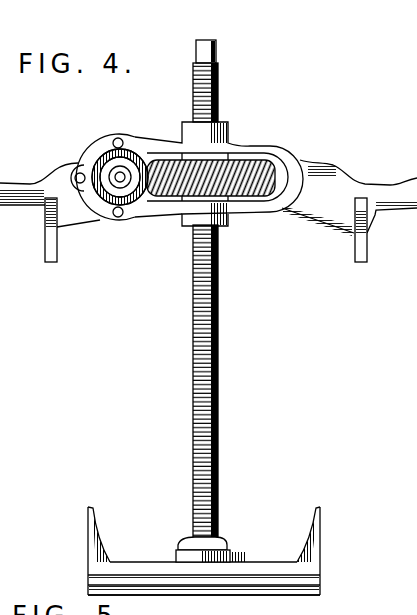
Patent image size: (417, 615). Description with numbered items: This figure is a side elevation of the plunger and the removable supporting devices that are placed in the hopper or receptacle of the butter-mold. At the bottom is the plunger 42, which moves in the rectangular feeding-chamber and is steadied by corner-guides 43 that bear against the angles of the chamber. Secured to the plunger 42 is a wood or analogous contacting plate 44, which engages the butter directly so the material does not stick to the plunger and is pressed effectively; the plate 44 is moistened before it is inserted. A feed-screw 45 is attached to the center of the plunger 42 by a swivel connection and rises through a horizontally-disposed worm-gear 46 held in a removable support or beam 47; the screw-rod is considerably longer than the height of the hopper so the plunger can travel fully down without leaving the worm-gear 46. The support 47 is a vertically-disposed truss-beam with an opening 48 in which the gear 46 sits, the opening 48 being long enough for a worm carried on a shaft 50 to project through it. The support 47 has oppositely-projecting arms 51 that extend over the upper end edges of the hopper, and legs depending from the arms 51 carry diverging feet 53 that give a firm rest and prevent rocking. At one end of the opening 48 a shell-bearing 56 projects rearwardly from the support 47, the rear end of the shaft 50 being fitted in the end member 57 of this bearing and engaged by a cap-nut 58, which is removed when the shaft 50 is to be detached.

The plunger 42 is at (260, 562).
The corner-guides 43 is at (92, 537).
The contacting plate 44 is at (308, 587).
The feed-screw 45 is at (219, 326).
The worm-gear 46 is at (163, 167).
The support or beam 47 is at (257, 136).
The opening 48 is at (263, 153).
The shaft 50 is at (204, 605).
The arms 51 is at (22, 182).
The feet 53 is at (50, 247).
The shell-bearing 56 is at (103, 161).
The end member 57 is at (123, 186).
The cap-nut 58 is at (125, 219).